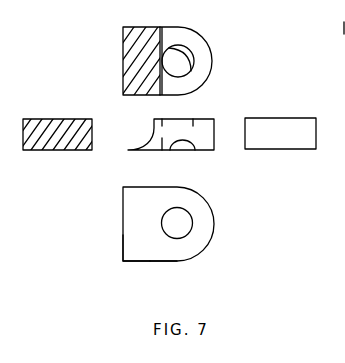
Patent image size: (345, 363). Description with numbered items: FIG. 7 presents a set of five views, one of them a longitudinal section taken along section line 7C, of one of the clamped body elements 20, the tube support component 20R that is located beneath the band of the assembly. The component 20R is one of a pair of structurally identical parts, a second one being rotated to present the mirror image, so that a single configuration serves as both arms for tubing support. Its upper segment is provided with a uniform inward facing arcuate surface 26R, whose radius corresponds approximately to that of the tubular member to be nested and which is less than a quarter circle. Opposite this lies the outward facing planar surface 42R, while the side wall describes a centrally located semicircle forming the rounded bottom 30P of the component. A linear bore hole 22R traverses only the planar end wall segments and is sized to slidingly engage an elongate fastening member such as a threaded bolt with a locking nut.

The arcuate surface 26R is at (124, 76).
The rounded bottom 30P is at (212, 60).
The bore hole 22R is at (204, 64).
The clamped body element 20 is at (292, 120).
The section line 7C is at (114, 146).
The tube support component 20R is at (123, 262).
The outward facing planar surface 42R is at (143, 240).